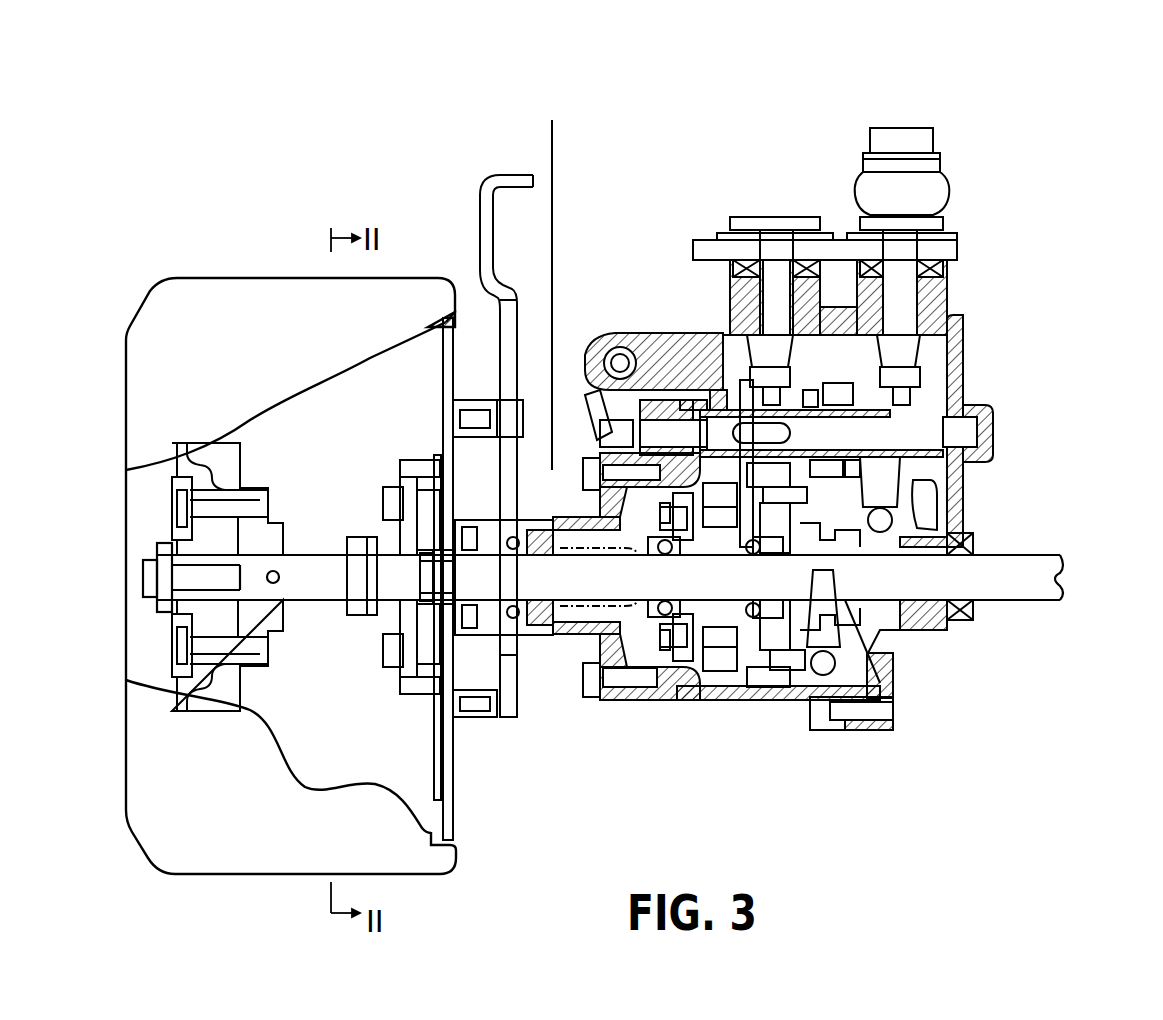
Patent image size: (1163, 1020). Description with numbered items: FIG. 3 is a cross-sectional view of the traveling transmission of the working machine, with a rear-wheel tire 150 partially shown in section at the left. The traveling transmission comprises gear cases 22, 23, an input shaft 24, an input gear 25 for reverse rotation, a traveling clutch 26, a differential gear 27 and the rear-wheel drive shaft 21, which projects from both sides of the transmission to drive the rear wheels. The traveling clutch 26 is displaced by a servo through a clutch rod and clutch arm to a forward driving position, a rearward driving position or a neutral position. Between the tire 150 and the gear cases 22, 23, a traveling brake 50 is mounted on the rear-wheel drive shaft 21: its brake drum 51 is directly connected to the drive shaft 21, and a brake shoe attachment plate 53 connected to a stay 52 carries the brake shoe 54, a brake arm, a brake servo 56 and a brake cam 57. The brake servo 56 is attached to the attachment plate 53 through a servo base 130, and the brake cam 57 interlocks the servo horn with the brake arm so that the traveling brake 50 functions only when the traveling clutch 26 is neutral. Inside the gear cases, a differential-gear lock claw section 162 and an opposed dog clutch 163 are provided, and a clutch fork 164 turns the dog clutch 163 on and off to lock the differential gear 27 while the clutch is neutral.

The rear-wheel tire 150 is at (175, 278).
The traveling brake 50 is at (378, 446).
The brake drum 51 is at (350, 538).
The stay 52 is at (478, 228).
The brake shoe attachment plate 53 is at (445, 320).
The brake shoe 54 is at (415, 458).
The brake servo 56 is at (551, 274).
The brake cam 57 is at (416, 538).
The servo base 130 is at (500, 392).
The rear-wheel drive shaft 21 is at (1022, 553).
The gear case 22 is at (993, 405).
The gear case 23 is at (672, 338).
The input shaft 24 is at (905, 235).
The input gear for reverse rotation 25 is at (813, 217).
The traveling clutch 26 is at (897, 387).
The differential gear 27 is at (740, 686).
The differential-gear lock claw section 162 is at (838, 730).
The dog clutch 163 is at (857, 618).
The clutch fork 164 is at (880, 732).